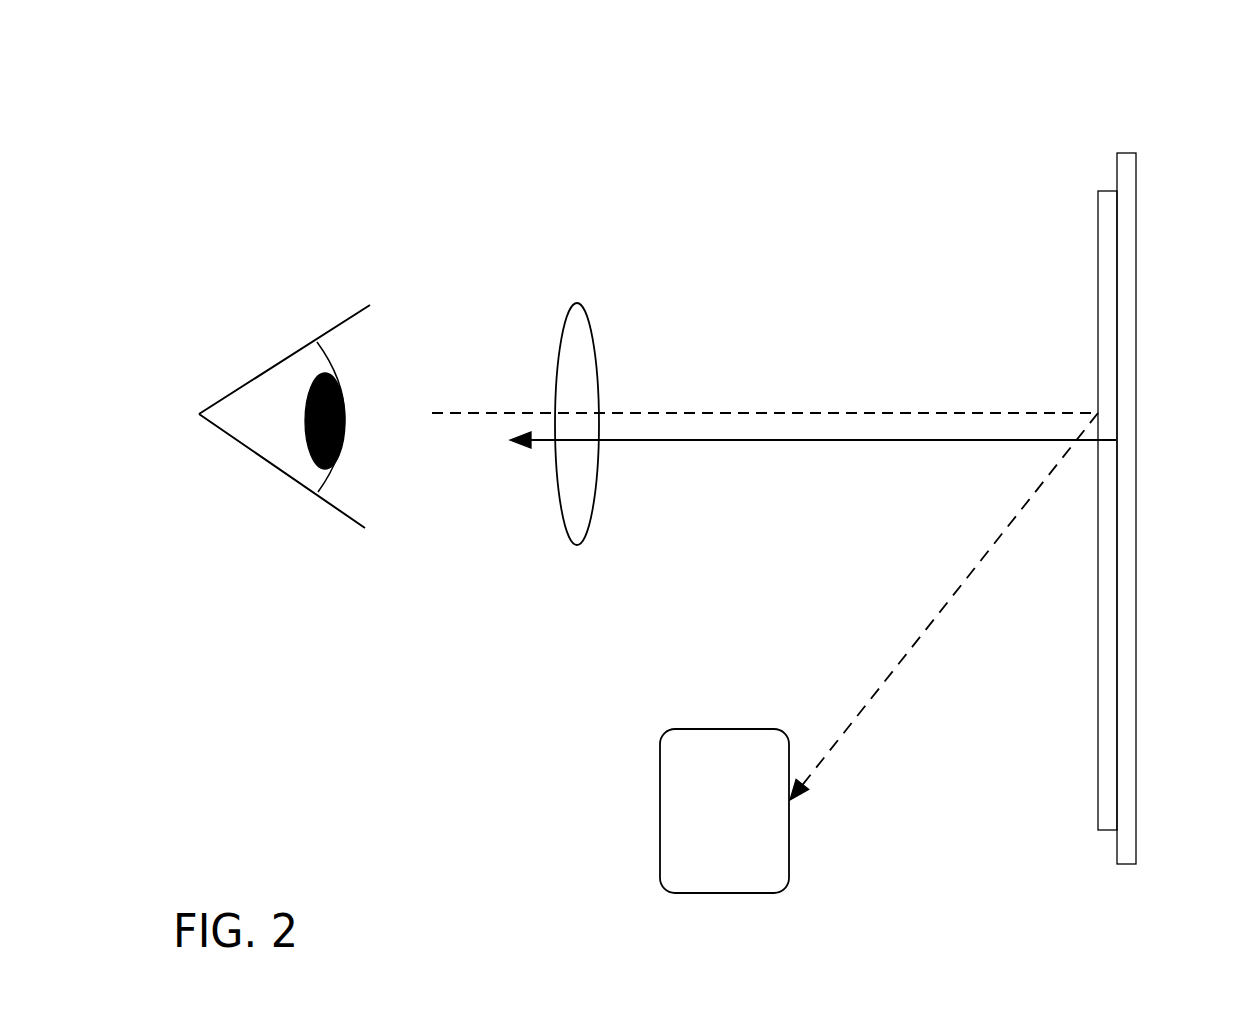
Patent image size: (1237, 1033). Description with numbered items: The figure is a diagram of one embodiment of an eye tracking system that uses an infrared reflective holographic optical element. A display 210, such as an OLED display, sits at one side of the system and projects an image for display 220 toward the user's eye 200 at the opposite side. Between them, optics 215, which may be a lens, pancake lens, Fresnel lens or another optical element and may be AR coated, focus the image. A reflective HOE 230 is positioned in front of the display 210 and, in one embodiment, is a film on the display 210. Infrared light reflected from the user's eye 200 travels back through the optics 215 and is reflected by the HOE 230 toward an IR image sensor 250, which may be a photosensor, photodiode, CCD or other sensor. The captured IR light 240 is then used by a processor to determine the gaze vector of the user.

The eye 200 is at (284, 398).
The display 210 is at (1173, 508).
The optics 215 is at (577, 383).
The image for display 220 is at (813, 463).
The reflective holographic optical element 230 is at (1106, 178).
The IR light 240 is at (765, 573).
The IR image sensor 250 is at (724, 811).